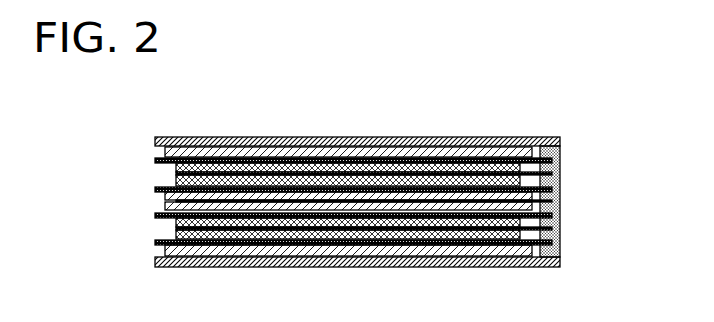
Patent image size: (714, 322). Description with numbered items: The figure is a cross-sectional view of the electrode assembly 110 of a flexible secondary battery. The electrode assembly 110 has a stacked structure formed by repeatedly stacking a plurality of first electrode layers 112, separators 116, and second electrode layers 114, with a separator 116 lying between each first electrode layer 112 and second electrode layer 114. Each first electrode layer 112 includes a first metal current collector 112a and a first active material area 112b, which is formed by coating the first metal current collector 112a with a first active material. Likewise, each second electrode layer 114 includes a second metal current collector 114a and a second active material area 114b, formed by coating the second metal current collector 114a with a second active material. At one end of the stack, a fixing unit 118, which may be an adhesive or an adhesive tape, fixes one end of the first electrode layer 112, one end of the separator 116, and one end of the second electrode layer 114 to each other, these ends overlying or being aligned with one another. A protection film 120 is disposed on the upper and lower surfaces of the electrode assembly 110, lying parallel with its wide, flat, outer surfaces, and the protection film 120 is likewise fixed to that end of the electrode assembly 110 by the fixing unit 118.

The electrode assembly 110 is at (593, 128).
The first electrode layer 112 is at (80, 125).
The first metal current collector 112a is at (157, 146).
The first active material area 112b is at (154, 161).
The second electrode layer 114 is at (80, 212).
The second metal current collector 114a is at (168, 235).
The second active material area 114b is at (154, 215).
The separator 116 is at (154, 189).
The fixing unit 118 is at (560, 183).
The protection film 120 is at (498, 137).